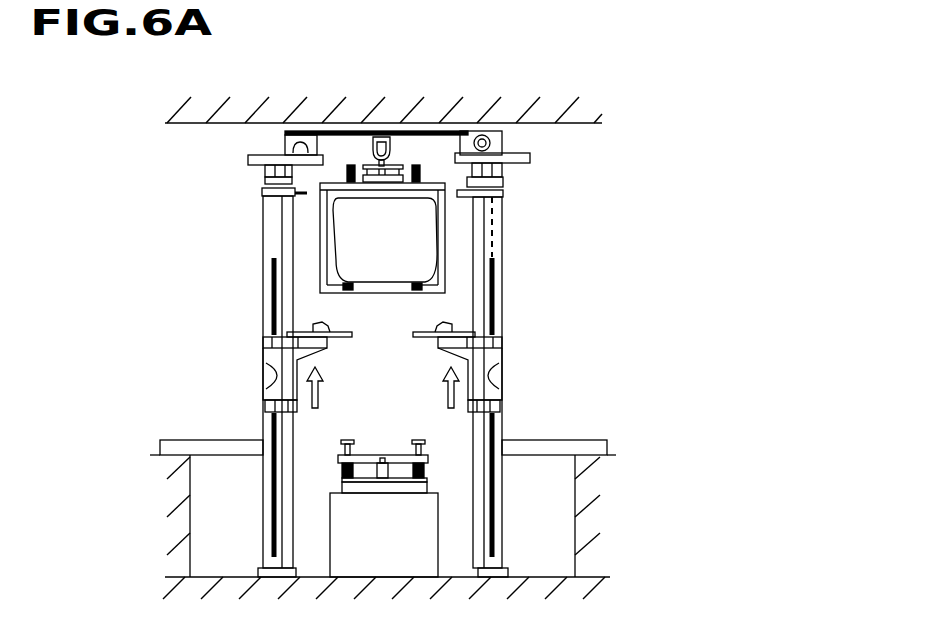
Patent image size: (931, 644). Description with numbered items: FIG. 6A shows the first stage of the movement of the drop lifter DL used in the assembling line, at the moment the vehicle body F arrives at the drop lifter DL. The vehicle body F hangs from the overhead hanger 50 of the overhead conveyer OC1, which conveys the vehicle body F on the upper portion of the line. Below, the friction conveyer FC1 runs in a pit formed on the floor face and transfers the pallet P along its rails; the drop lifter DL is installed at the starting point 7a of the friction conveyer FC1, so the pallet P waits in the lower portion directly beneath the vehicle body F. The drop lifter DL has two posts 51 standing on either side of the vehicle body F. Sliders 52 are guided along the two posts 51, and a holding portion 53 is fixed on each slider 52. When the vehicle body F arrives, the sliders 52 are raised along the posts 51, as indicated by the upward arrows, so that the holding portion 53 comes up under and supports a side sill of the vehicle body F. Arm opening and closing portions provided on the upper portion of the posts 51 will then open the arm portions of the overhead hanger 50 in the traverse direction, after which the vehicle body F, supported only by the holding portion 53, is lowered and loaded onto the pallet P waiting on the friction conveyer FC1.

The overhead hanger 50 is at (342, 182).
The overhead conveyer OC1 is at (387, 122).
The drop lifter DL is at (208, 218).
The vehicle body F is at (422, 227).
The posts 51 is at (272, 300).
The sliders 52 is at (282, 370).
The holding portion 53 is at (414, 338).
The pallet P is at (372, 457).
The friction conveyer FC1 is at (428, 467).
The starting point 7a is at (312, 508).